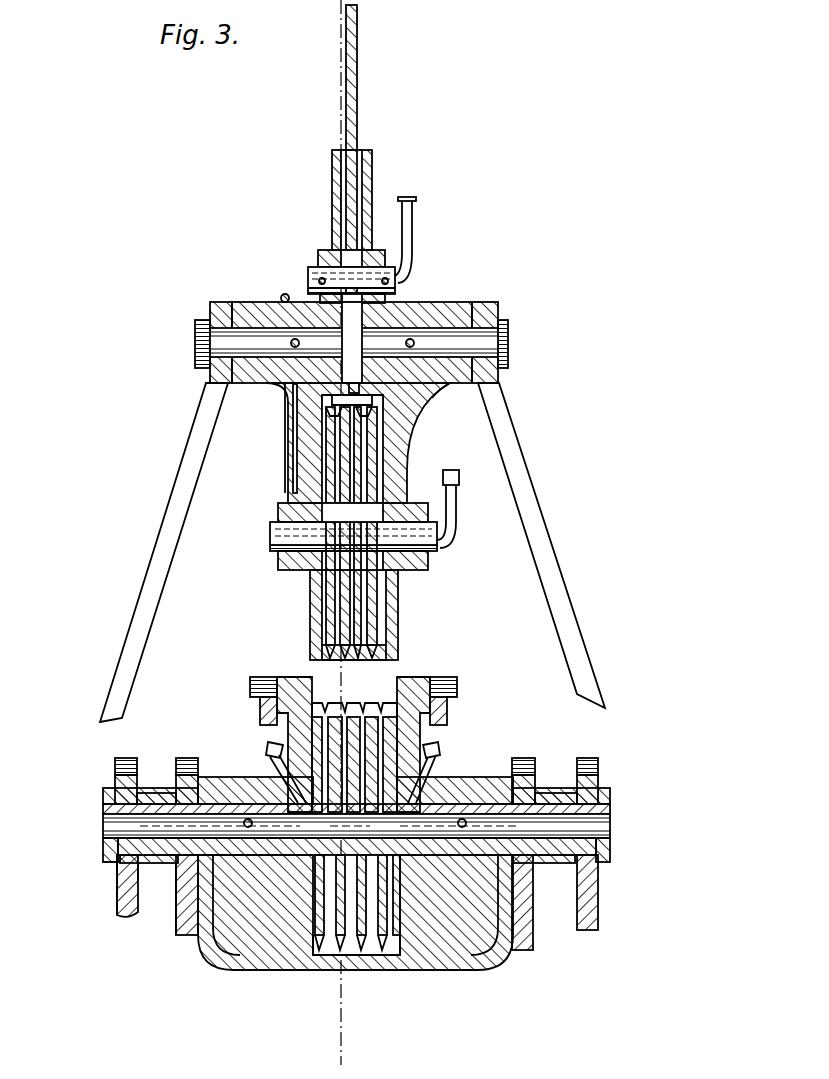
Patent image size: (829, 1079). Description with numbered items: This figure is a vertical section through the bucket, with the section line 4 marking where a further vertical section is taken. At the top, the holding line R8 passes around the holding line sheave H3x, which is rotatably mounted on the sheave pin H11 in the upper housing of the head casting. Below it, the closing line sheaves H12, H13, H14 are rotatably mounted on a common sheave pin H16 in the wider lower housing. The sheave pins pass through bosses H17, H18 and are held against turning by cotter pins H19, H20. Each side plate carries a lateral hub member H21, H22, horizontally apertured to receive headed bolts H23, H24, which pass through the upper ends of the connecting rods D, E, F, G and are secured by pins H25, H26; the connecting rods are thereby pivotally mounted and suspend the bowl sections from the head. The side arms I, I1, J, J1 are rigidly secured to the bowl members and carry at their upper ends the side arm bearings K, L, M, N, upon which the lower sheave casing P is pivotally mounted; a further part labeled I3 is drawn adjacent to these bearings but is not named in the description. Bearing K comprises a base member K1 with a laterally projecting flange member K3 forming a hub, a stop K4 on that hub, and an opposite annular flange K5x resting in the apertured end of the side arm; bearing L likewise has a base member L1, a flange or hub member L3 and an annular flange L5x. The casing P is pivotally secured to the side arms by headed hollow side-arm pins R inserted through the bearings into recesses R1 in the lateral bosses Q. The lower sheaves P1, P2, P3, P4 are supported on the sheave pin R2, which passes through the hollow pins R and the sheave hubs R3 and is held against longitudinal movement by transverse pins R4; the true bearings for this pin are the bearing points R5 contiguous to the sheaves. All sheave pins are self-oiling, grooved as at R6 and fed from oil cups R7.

The section line 4— 4 is at (337, 32).
The holding line R8 is at (353, 88).
The boss H17 is at (323, 252).
The holding line sheave H3x is at (372, 186).
The boss H18 is at (374, 246).
The cotter pin H19 is at (311, 281).
The cotter pin H20 is at (396, 283).
The hub member H21 is at (291, 298).
The headed bolt H23 is at (213, 302).
The oil cup R7 is at (413, 216).
The sheave pin H11 is at (386, 301).
The connecting rod D is at (235, 302).
The connecting rod E is at (492, 329).
The hub member H22 is at (405, 293).
The headed bolt H24 is at (507, 326).
The groove R6 is at (446, 341).
The pin H25 is at (295, 348).
The connecting rod F is at (208, 414).
The connecting rod G is at (506, 456).
The closing line sheave H12 is at (300, 452).
The pin H26 is at (500, 378).
The sheave hub R3 is at (289, 446).
The closing line sheave H13 is at (386, 399).
The closing line sheave H14 is at (376, 421).
The sheave pin H16 is at (429, 556).
The sheave P1 is at (323, 692).
The sheave P4 is at (376, 702).
The sheave P2 is at (352, 702).
The sheave P3 is at (346, 702).
The lateral boss Q is at (216, 780).
The sheave pin R2 is at (612, 830).
The transverse pin R4 is at (464, 818).
The hollow side-arm pin R is at (609, 801).
The recess R1 is at (276, 870).
The stop K4 is at (128, 758).
The side arm bearing K is at (137, 766).
The side arm bearing L is at (186, 758).
The flange or hub member L3 is at (162, 793).
The side arm bearing N is at (523, 758).
The side arm bearing M is at (588, 758).
The side arm I is at (123, 902).
The base member L1 is at (187, 921).
The side arm J is at (521, 951).
The side arm J1 is at (599, 931).
The side arm I1 is at (200, 930).
The lip I3 is at (359, 875).
The base member K1 is at (136, 916).
The annular flange K5x is at (118, 868).
The annular flange L5x is at (178, 902).
The sheave casing P is at (283, 973).
The bearing points R5 is at (313, 878).